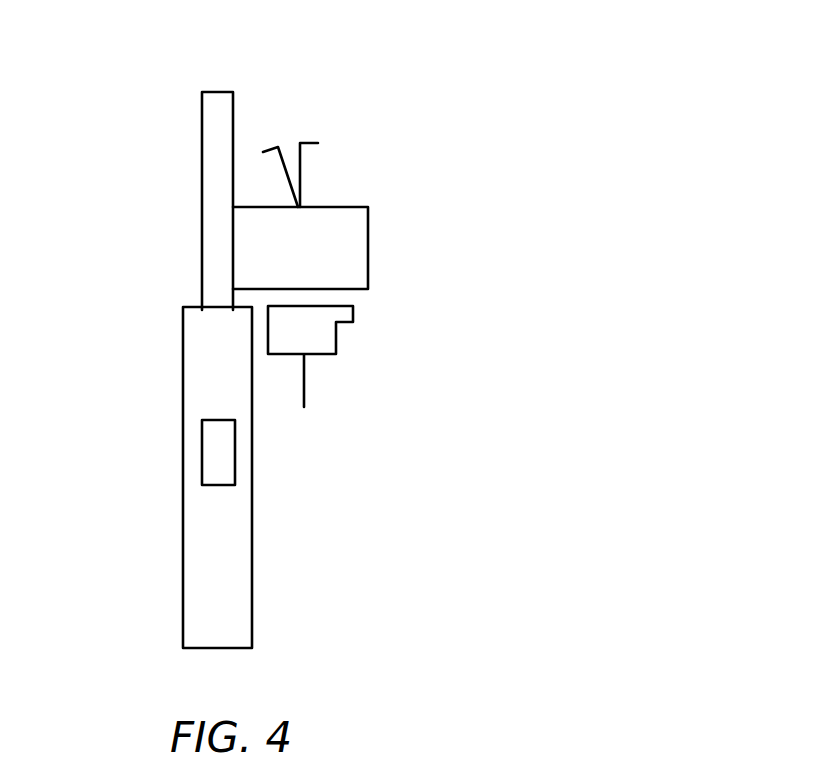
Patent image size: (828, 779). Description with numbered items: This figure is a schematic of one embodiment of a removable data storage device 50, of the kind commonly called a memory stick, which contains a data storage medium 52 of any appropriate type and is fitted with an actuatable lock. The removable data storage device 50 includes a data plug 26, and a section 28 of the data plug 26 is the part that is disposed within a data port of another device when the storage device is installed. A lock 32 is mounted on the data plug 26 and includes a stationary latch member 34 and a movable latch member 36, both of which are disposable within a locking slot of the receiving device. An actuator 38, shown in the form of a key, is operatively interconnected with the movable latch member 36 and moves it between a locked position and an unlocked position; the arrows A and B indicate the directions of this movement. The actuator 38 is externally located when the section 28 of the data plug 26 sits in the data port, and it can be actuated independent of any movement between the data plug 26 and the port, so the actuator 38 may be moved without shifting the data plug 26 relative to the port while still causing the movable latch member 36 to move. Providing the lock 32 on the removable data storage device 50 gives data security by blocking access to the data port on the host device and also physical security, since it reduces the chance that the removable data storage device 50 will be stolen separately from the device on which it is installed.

The data plug 26 is at (200, 225).
The section 28 is at (183, 93).
The lock 32 is at (430, 195).
The stationary latch member 34 is at (302, 162).
The movable latch member 36 is at (284, 164).
The actuator 38 is at (337, 335).
The removable data storage device 50 is at (508, 403).
The data storage medium 52 is at (218, 463).
The direction A is at (247, 118).
The direction B is at (250, 143).